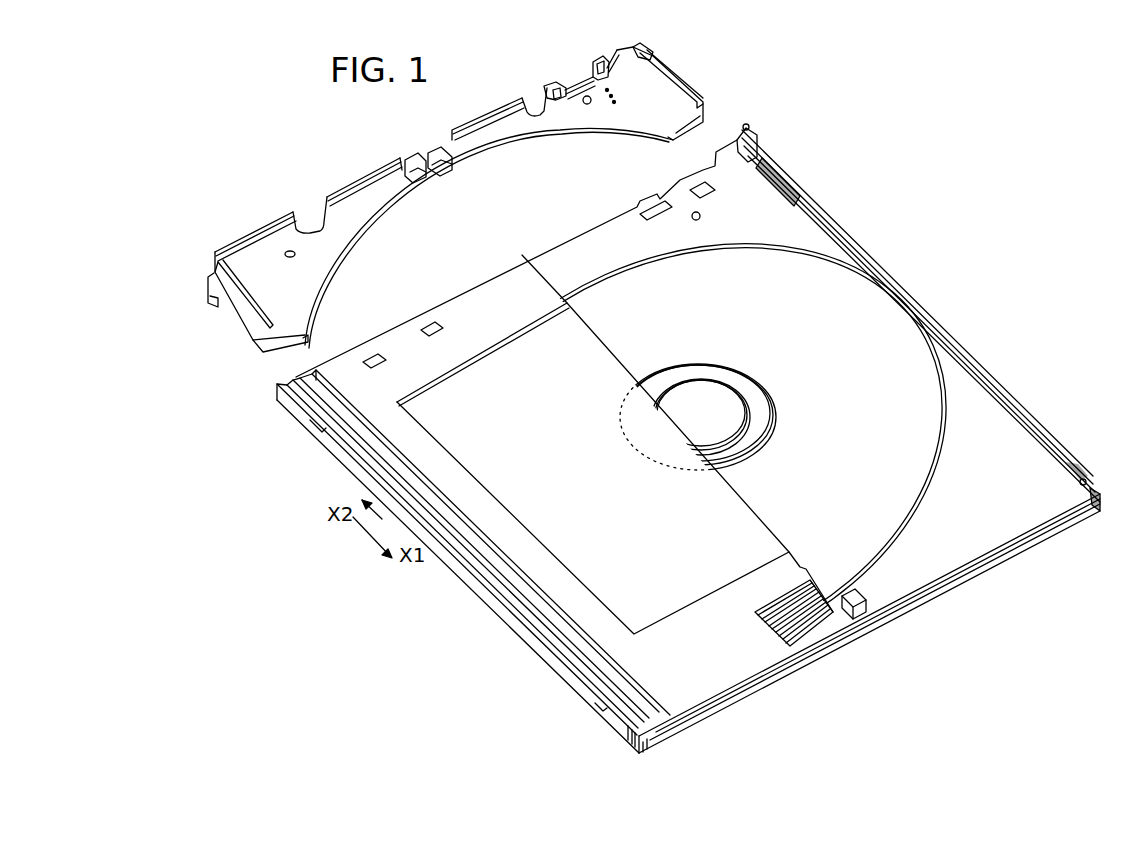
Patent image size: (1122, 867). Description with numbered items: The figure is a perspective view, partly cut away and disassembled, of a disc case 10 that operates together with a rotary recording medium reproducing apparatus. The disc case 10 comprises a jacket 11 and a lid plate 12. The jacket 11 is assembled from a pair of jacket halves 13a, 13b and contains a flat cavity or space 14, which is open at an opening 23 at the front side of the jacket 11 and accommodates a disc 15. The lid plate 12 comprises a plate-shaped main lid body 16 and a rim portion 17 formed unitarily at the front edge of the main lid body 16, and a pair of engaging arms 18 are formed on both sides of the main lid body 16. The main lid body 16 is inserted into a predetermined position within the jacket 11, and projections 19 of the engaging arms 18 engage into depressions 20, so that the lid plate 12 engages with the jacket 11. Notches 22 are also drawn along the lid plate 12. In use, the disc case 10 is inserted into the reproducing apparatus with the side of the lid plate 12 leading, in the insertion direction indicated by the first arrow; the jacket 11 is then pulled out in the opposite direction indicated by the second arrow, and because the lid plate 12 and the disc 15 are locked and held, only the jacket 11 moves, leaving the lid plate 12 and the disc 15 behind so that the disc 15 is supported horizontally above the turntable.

The disc case 10 is at (796, 143).
The jacket 11 is at (480, 608).
The lid plate 12 is at (346, 176).
The jacket half 13a is at (803, 653).
The jacket half 13b is at (1000, 560).
The flat cavity or space 14 is at (1004, 428).
The disc 15 is at (923, 465).
The main lid body 16 is at (523, 131).
The rim portion 17 is at (468, 123).
The engaging arm 18 is at (232, 323).
The projection 19 is at (210, 303).
The depression 20 is at (762, 162).
The notch 22 is at (308, 220).
The opening 23 is at (530, 253).